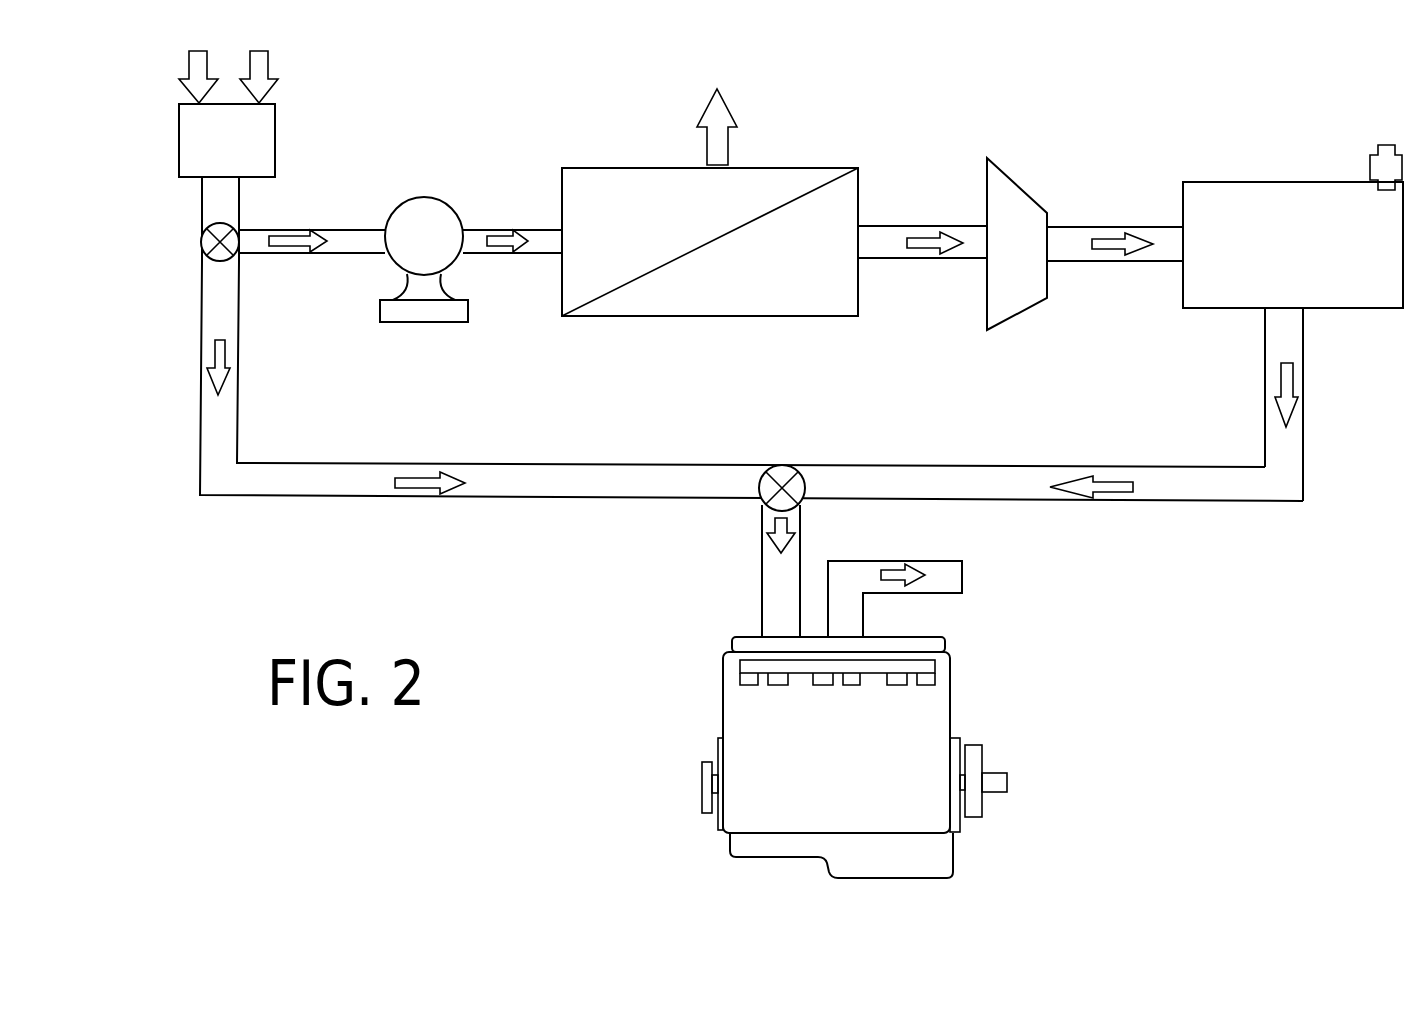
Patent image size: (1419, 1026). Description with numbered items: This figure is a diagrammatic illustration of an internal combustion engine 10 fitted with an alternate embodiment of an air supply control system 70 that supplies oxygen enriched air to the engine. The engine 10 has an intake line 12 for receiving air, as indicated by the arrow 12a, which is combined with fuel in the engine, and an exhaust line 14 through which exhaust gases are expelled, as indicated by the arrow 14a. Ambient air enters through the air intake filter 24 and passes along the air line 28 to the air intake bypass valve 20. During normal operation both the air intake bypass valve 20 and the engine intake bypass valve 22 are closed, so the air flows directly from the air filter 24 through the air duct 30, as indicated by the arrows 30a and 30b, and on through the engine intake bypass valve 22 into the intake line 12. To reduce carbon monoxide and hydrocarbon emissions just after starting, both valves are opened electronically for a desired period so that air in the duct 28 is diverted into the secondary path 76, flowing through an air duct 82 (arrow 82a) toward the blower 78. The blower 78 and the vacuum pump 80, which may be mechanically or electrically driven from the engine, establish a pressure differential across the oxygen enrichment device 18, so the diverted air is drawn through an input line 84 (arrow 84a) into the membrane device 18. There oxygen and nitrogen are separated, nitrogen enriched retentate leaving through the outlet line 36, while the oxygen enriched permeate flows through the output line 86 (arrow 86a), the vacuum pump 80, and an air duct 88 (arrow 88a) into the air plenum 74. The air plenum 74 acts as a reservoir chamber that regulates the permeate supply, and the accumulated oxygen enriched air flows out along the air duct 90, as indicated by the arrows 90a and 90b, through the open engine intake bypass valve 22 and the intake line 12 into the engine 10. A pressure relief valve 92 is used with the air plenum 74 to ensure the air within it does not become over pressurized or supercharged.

The internal combustion engine 10 is at (748, 862).
The intake line 12 is at (762, 562).
The arrow 12a is at (762, 525).
The exhaust line 14 is at (962, 594).
The arrow 14a is at (905, 565).
The oxygen enrichment device 18 is at (608, 168).
The air intake bypass valve 20 is at (202, 232).
The engine intake bypass valve 22 is at (784, 464).
The air intake filter 24 is at (275, 128).
The air line 28 is at (239, 200).
The air duct 30 is at (198, 318).
The arrow 30a is at (210, 358).
The arrow 30b is at (422, 477).
The outlet line 36 is at (728, 139).
The air supply control system 70 is at (502, 137).
The air plenum 74 is at (1381, 310).
The secondary path 76 is at (598, 350).
The blower 78 is at (413, 197).
The vacuum pump 80 is at (1010, 172).
The air duct 82 is at (330, 230).
The arrow 82a is at (300, 253).
The input line 84 is at (491, 230).
The arrow 84a is at (512, 253).
The output line 86 is at (888, 226).
The arrow 86a is at (935, 258).
The air duct 88 is at (1082, 227).
The arrow 88a is at (1120, 262).
The air duct 90 is at (1305, 438).
The arrow 90a is at (1275, 385).
The arrow 90b is at (1105, 474).
The pressure relief valve 92 is at (1387, 150).